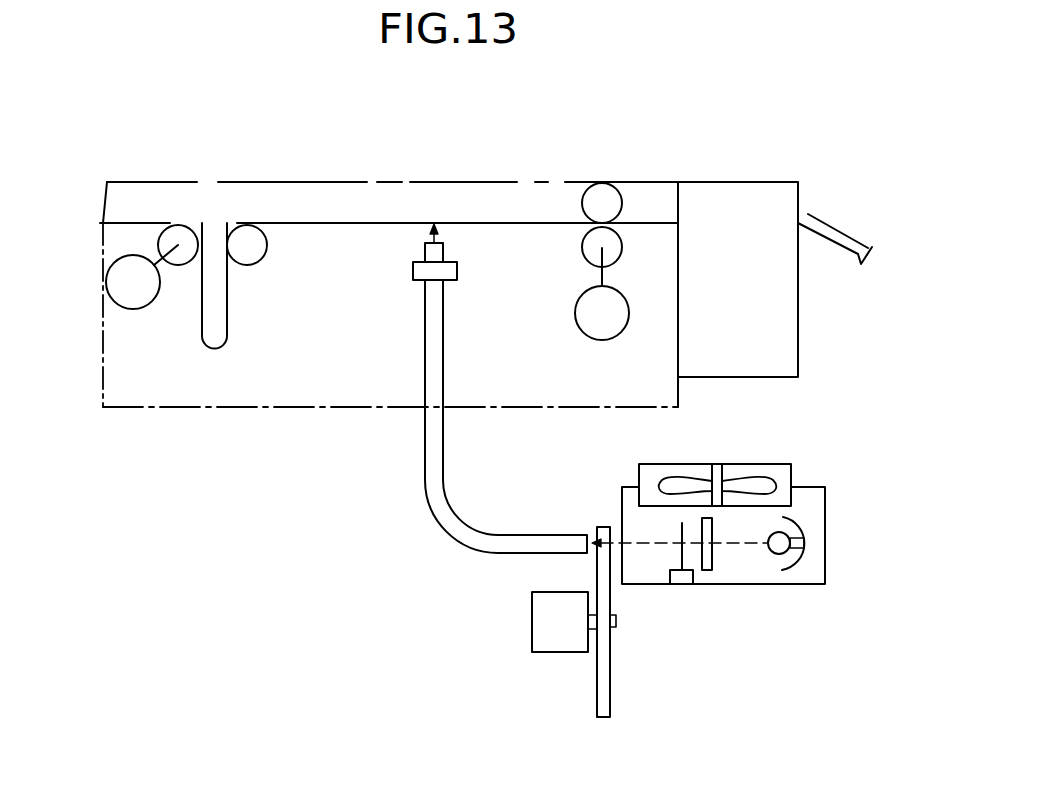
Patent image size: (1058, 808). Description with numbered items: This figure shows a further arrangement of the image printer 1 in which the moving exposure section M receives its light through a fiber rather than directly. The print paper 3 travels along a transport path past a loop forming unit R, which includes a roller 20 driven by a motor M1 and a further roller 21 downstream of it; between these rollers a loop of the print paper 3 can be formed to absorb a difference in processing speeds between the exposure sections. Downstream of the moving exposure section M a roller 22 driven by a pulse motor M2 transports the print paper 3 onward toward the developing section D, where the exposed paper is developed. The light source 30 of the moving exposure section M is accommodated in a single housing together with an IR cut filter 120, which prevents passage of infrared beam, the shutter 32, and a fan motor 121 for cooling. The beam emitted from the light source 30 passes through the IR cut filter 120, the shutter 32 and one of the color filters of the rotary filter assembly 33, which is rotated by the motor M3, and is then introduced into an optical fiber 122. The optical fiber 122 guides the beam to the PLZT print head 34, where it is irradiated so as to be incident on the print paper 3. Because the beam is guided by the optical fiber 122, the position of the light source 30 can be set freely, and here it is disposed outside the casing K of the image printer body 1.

The image printer 1 is at (275, 518).
The print paper 3 is at (140, 223).
The roller 20 is at (182, 232).
The roller 21 is at (255, 255).
The roller 22 is at (598, 190).
The loop forming unit R is at (222, 212).
The motor M1 is at (142, 300).
The pulse motor M2 is at (577, 323).
The motor M3 is at (533, 650).
The moving exposure section M is at (418, 580).
The PLZT print head 34 is at (413, 280).
The developing section D is at (738, 180).
The casing K is at (508, 407).
The fan motor 121 is at (760, 472).
The optical fiber 122 is at (423, 497).
The IR cut filter 120 is at (712, 560).
The moving-exposure light source 30 is at (782, 568).
The shutter 32 is at (680, 550).
The rotary filter assembly 33 is at (610, 703).